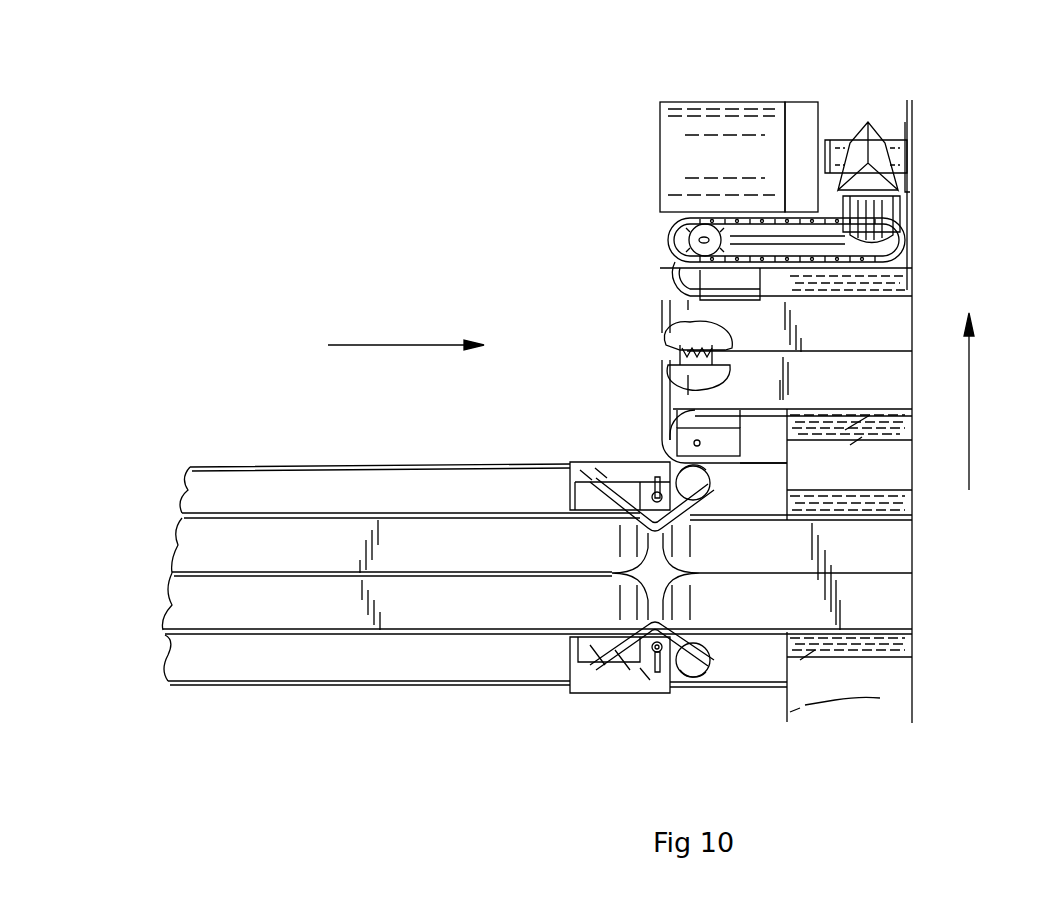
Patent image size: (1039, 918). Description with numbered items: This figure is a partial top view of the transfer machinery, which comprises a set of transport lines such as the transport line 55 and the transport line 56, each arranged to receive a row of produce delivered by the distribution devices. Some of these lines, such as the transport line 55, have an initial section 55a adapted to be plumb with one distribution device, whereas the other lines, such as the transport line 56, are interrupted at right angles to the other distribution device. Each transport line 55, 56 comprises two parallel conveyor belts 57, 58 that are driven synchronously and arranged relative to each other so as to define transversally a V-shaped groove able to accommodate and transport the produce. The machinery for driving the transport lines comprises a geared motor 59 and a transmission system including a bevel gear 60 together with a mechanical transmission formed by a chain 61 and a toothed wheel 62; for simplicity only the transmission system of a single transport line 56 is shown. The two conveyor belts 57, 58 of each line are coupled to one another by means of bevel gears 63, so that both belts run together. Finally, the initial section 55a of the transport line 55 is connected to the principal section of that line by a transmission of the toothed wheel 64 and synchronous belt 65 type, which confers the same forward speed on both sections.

The transport line 55 is at (888, 560).
The initial section 55a is at (328, 478).
The transport line 56 is at (892, 381).
The conveyor belt 57 is at (897, 598).
The conveyor belt 58 is at (900, 528).
The geared motor 59 is at (683, 110).
The bevel gear 60 is at (862, 130).
The chain 61 is at (675, 243).
The toothed wheel 62 is at (690, 233).
The bevel gears 63 is at (683, 348).
The toothed wheel 64 is at (703, 672).
The synchronous belt 65 is at (595, 675).